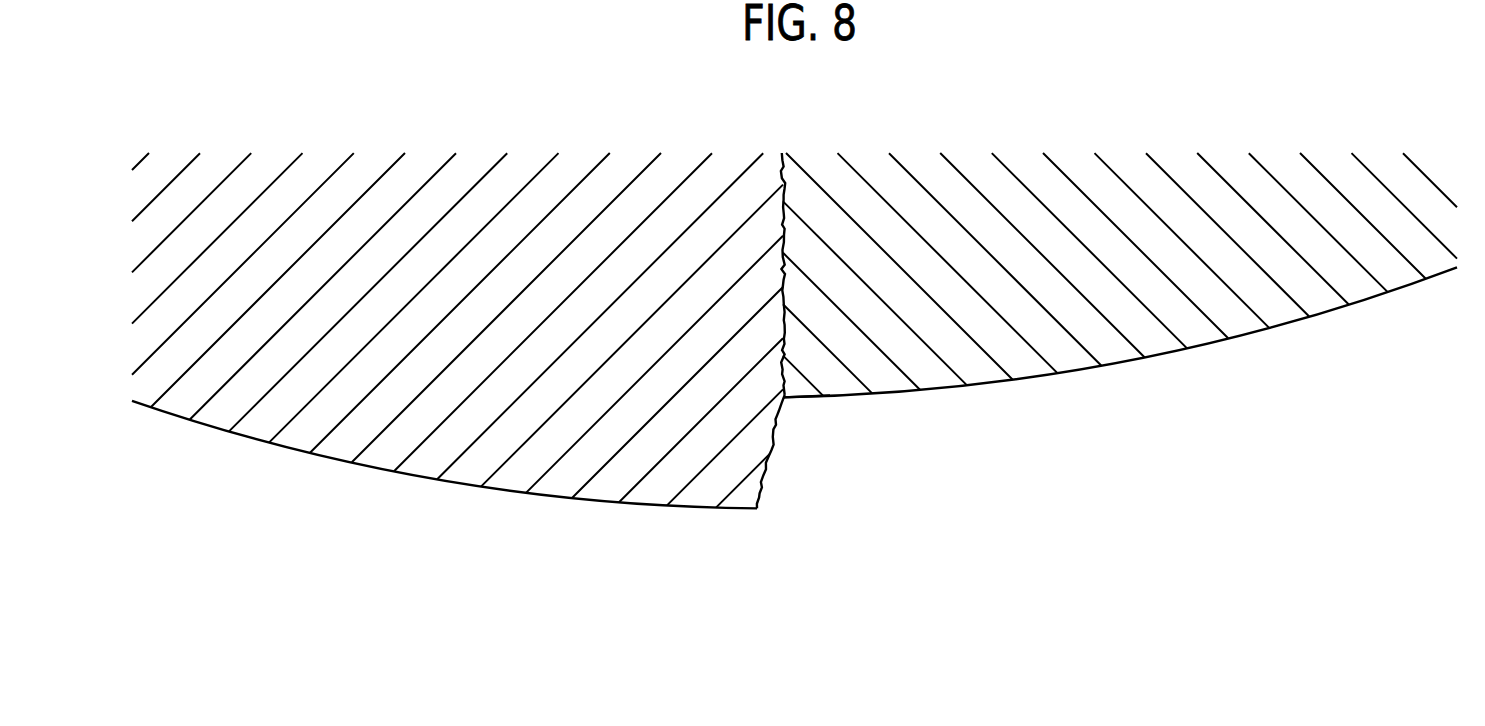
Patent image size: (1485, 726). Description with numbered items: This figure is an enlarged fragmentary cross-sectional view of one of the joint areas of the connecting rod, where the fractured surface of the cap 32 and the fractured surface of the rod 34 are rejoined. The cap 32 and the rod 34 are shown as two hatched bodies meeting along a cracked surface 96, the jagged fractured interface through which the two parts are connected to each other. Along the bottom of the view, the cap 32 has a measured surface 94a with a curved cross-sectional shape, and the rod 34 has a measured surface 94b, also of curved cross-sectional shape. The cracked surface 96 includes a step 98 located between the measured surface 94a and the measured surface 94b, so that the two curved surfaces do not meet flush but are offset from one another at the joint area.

The cap 32 is at (378, 194).
The rod 34 is at (1228, 192).
The cracked surface 96 is at (785, 242).
The step 98 is at (767, 478).
The measured surface 94a is at (440, 483).
The measured surface 94b is at (1128, 365).